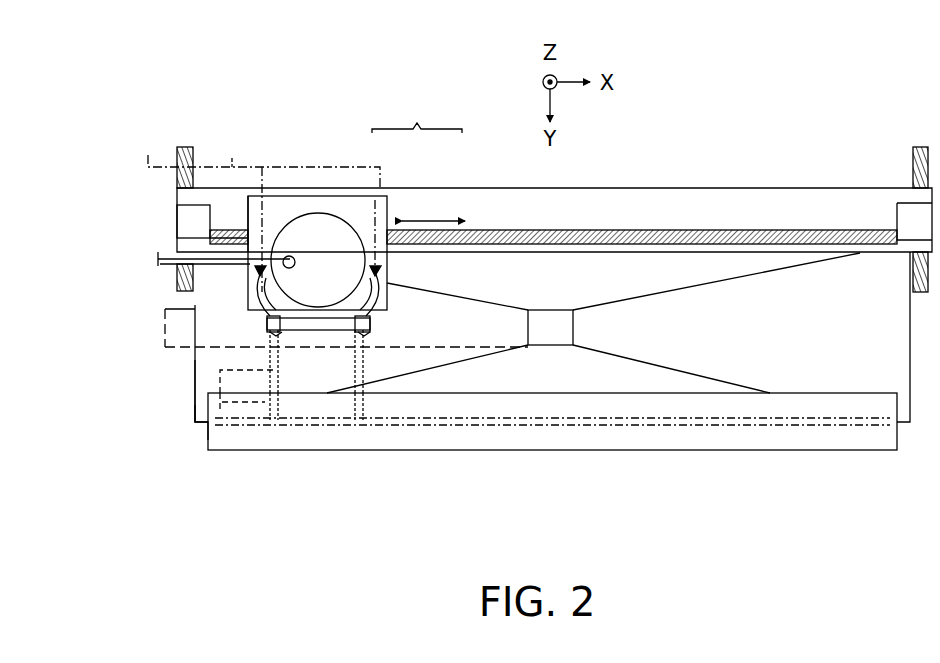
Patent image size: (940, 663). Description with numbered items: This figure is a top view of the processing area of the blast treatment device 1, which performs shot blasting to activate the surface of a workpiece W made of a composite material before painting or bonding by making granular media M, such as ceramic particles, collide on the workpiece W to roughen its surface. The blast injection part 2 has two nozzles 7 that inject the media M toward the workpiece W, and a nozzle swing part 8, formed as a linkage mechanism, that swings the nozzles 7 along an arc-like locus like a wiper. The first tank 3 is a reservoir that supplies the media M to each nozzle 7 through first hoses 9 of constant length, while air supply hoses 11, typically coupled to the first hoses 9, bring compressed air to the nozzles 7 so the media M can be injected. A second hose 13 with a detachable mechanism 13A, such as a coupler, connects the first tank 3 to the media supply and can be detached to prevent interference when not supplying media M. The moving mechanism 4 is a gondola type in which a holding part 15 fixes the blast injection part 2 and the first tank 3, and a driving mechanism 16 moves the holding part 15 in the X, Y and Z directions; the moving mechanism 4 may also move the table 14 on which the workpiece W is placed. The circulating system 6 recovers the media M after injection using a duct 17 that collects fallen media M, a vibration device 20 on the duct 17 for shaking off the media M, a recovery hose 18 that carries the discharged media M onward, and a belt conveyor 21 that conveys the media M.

The blast treatment device 1 is at (252, 60).
The blast injection part 2 is at (336, 336).
The first tank 3 is at (325, 237).
The moving mechanism 4 is at (418, 156).
The circulating system 6 is at (186, 375).
The nozzle 7 is at (372, 330).
The nozzle swing part 8 is at (305, 333).
The first hose 9 is at (392, 288).
The air supply hose 11 is at (230, 160).
The second hose 13 is at (158, 257).
The detachable mechanism 13A is at (290, 232).
The table 14 is at (530, 451).
The holding part 15 is at (367, 188).
The driving mechanism 16 is at (450, 186).
The duct 17 is at (198, 415).
The recovery hose 18 is at (178, 346).
The vibration device 20 is at (240, 428).
The belt conveyor 21 is at (215, 305).
The media M is at (334, 432).
The workpiece W is at (466, 426).